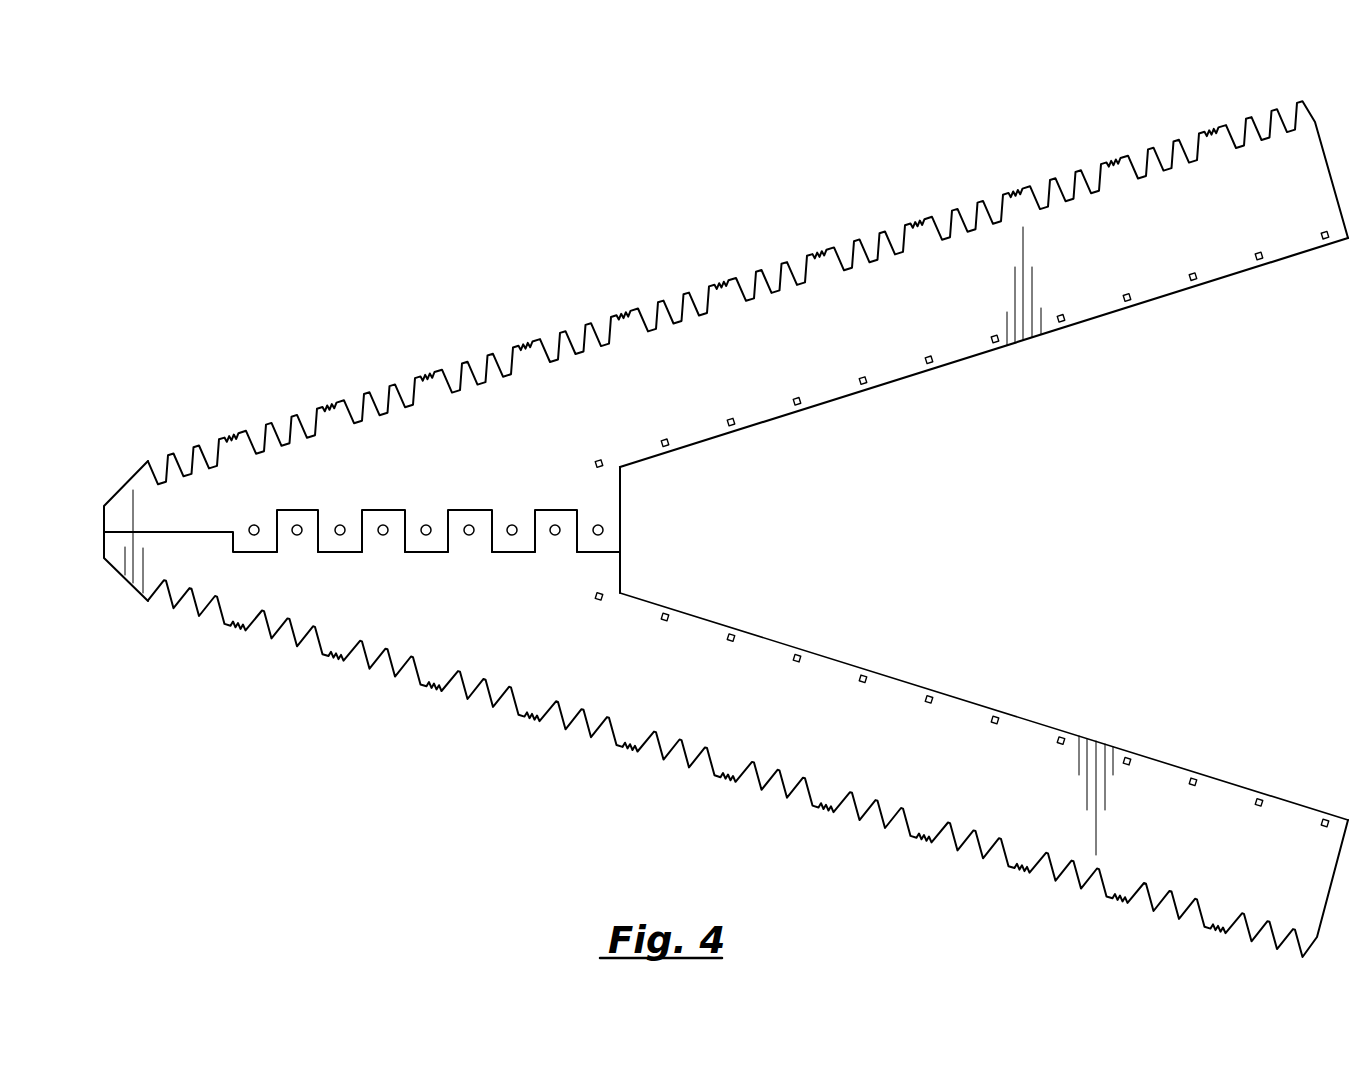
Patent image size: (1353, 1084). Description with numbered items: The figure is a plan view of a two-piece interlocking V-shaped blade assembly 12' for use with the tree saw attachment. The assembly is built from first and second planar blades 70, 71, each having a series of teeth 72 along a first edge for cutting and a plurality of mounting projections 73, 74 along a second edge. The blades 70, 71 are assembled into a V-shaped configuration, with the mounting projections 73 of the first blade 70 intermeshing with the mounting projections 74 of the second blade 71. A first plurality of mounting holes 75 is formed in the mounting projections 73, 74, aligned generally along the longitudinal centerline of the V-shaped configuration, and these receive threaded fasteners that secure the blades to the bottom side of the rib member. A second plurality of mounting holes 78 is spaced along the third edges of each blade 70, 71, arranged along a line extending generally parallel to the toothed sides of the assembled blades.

The V-shaped blade assembly 12' is at (726, 529).
The first planar blade 70 is at (733, 709).
The second planar blade 71 is at (730, 379).
The teeth 72 is at (314, 430).
The mounting projections 73 is at (373, 517).
The mounting projections 74 is at (613, 537).
The first plurality of mounting holes 75 is at (557, 528).
The second plurality of mounting holes 78 is at (803, 409).